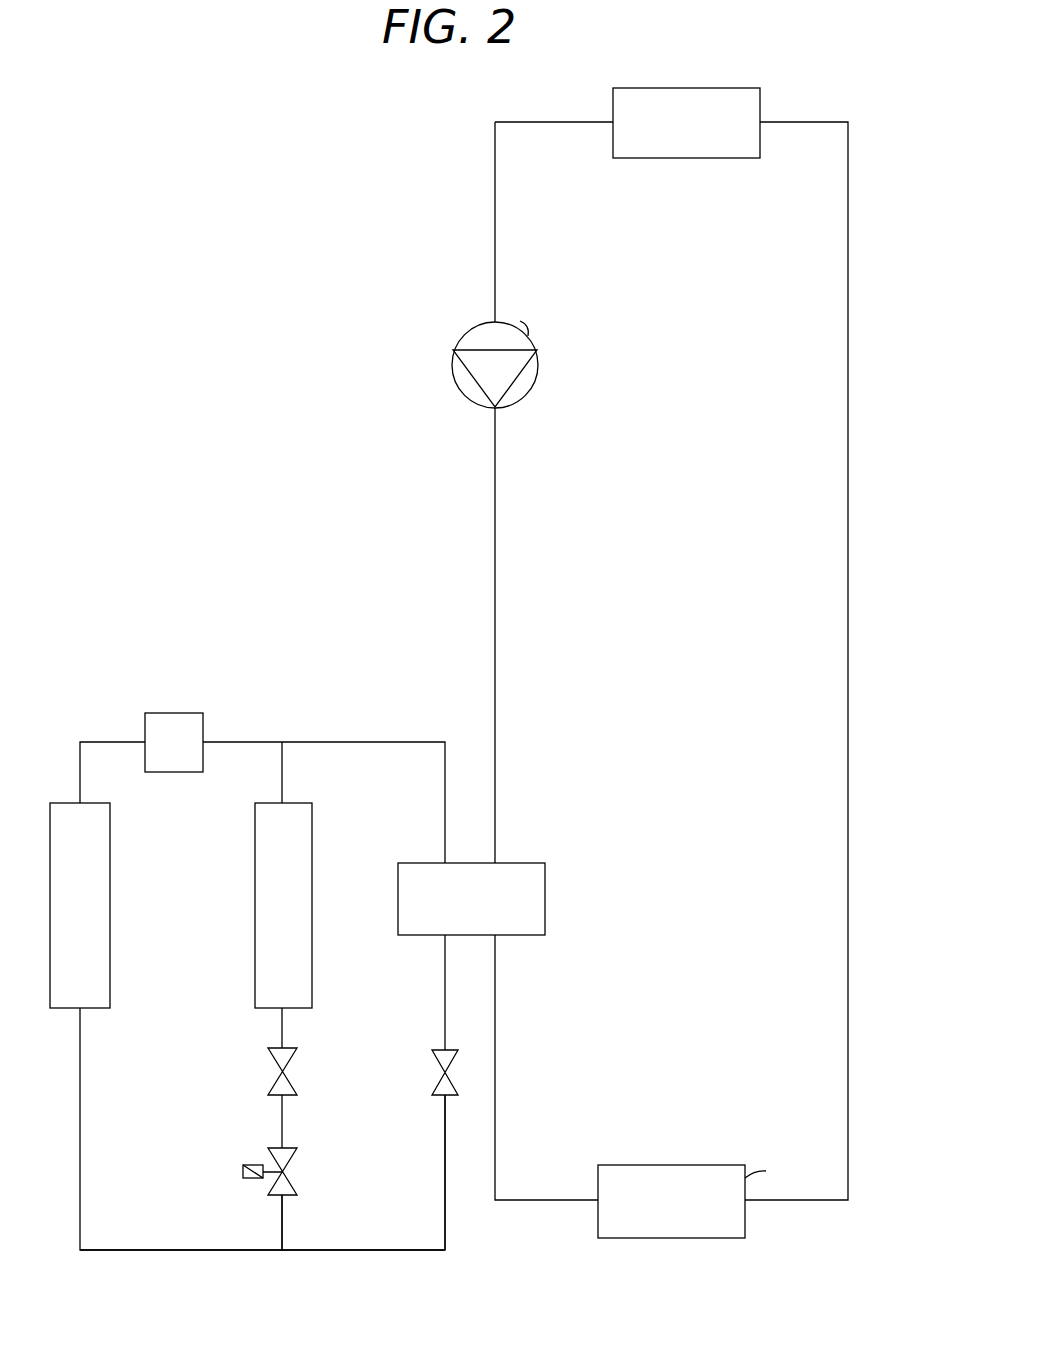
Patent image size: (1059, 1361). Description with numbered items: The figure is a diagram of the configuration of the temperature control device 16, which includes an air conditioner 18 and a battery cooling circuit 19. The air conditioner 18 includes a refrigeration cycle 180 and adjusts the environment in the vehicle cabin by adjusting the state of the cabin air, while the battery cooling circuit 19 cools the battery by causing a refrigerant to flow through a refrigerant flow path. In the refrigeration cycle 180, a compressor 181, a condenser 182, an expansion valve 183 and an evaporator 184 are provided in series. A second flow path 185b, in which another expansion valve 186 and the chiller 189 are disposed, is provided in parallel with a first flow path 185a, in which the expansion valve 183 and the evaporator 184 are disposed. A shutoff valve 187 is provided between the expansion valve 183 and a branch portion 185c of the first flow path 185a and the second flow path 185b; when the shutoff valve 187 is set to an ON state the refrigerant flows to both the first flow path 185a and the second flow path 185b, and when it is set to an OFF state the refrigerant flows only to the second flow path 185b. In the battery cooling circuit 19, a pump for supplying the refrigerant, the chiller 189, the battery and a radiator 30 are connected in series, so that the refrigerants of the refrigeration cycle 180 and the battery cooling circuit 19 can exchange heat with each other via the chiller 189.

The temperature control device 16 is at (348, 180).
The battery cooling circuit 19 is at (825, 105).
The radiator 30 is at (725, 88).
The air conditioner 18 is at (147, 677).
The refrigeration cycle 180 is at (252, 742).
The compressor 181 is at (190, 713).
The condenser 182 is at (110, 845).
The evaporator 184 is at (312, 840).
The expansion valve 183 is at (290, 1050).
The shutoff valve 187 is at (278, 1150).
The expansion valve 186 is at (437, 1050).
The chiller 189 is at (530, 863).
The first flow path 185a is at (282, 1225).
The second flow path 185b is at (445, 1190).
The branch portion 185c is at (282, 1251).